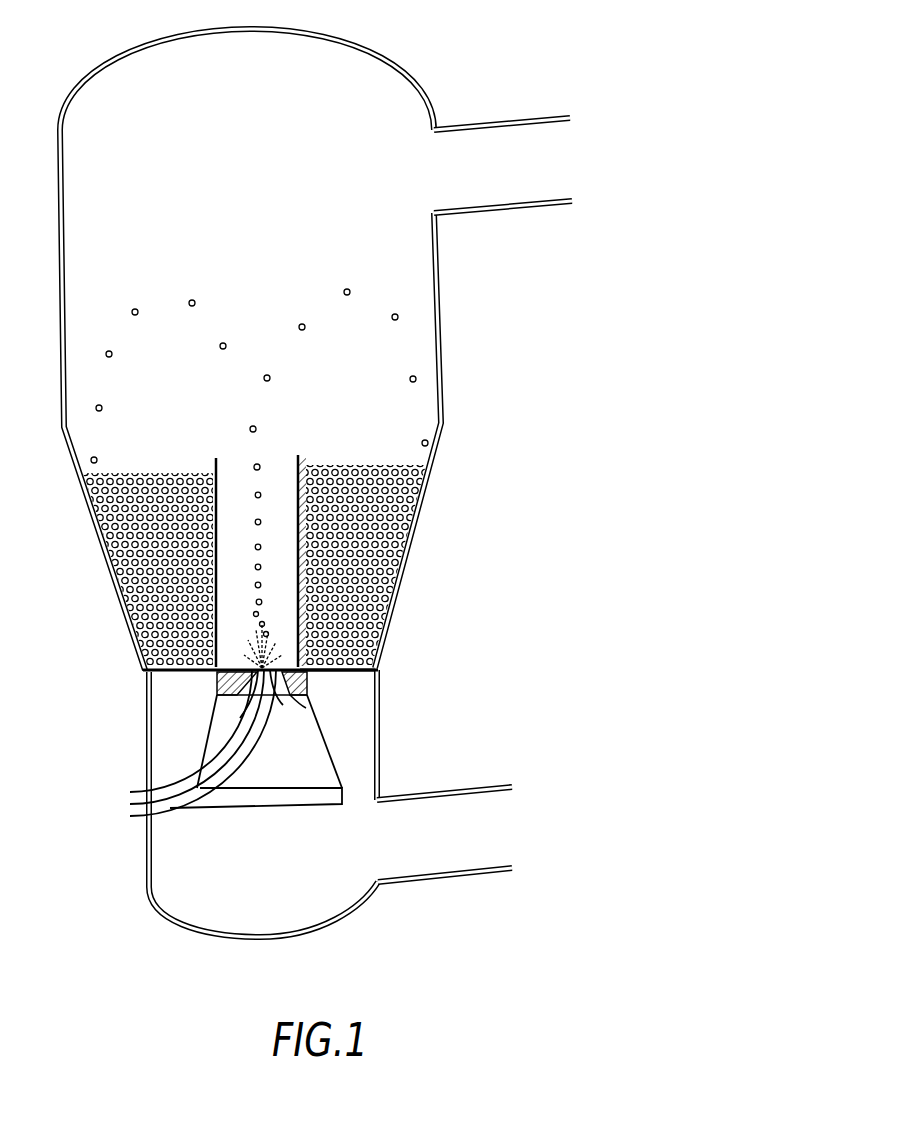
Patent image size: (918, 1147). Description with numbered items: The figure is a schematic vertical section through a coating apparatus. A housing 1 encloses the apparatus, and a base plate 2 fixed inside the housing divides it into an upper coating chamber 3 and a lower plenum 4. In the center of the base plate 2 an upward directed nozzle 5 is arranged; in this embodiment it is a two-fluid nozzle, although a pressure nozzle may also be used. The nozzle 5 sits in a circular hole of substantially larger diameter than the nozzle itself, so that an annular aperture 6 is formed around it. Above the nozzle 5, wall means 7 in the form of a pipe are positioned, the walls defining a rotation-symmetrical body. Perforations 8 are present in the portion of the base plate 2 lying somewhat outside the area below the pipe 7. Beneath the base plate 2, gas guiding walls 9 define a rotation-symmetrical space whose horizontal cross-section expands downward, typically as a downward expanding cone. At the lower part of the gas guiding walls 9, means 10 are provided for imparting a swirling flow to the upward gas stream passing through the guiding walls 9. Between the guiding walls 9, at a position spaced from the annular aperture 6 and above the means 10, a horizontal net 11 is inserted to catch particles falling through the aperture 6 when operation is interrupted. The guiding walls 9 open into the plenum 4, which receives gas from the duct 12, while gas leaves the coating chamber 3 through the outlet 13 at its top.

The housing 1 is at (439, 283).
The base plate 2 is at (333, 673).
The coating chamber 3 is at (241, 267).
The plenum 4 is at (253, 862).
The nozzle 5 is at (275, 697).
The annular aperture 6 is at (218, 703).
The wall means 7 is at (216, 473).
The perforations 8 is at (360, 672).
The gas guiding walls 9 is at (329, 758).
The means for imparting a swirling flow 10 is at (310, 795).
The horizontal net 11 is at (307, 707).
The duct 12 is at (458, 787).
The outlet 13 is at (500, 119).